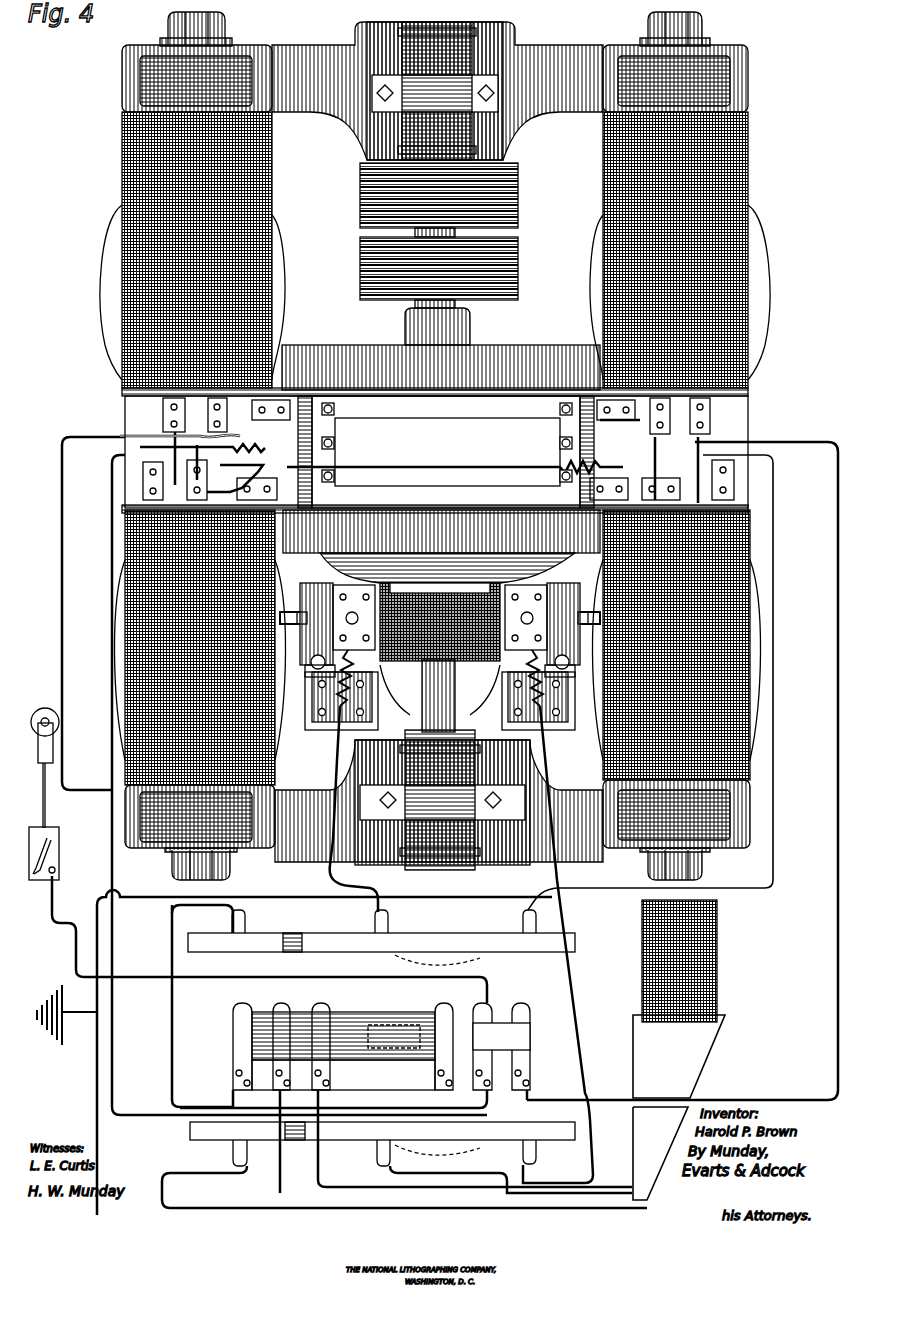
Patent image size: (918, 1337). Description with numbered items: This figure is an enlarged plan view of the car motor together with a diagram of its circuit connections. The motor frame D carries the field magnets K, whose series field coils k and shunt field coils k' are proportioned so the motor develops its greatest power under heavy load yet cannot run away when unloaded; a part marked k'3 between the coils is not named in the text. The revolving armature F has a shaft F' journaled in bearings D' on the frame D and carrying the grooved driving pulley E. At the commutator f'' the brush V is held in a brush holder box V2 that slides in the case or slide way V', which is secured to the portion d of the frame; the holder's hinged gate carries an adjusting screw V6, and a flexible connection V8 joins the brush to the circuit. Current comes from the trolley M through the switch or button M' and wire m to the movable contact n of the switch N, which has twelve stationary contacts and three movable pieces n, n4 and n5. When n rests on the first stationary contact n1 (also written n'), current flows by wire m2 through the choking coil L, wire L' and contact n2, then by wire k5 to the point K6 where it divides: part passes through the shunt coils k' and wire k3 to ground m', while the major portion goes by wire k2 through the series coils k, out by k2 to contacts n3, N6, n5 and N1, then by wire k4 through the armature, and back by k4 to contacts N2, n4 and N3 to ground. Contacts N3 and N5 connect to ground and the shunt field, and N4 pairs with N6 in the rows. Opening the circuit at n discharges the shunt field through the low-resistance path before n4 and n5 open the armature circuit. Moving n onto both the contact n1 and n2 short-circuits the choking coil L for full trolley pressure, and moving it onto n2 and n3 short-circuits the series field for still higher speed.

The motor frame D is at (437, 442).
The bearings D' is at (442, 435).
The field magnets K is at (272, 270).
The shunt field coils k' is at (433, 446).
The series field coils k is at (421, 482).
The circuit wire to shunt coils k3 is at (105, 335).
The circuit wire connections to series coils k2 is at (228, 428).
The terminal board k'3 is at (435, 450).
The grooved driving pulley E is at (518, 186).
The armature shaft F' is at (458, 520).
The revolving armature F is at (441, 367).
The commutator f'' is at (441, 547).
The brush holder box V2 is at (383, 590).
The flexible connection V8 is at (352, 630).
The case or slide way V' is at (460, 603).
The adjusting screw V6 is at (300, 610).
The brush V is at (440, 690).
The portion of the motor frame d is at (312, 690).
The armature circuit wire k4 is at (330, 862).
The trolley M is at (54, 760).
The switch or button M' is at (65, 853).
The trolley circuit wire m is at (260, 939).
The ground m' is at (61, 1012).
The circuit dividing point K6 is at (105, 787).
The wire from contact n2 k5 is at (112, 1025).
The stationary contact piece N4 is at (381, 931).
The stationary contact piece N2 is at (375, 931).
The stationary contact piece N3 is at (520, 931).
The movable contact piece n4 is at (457, 966).
The stationary contact piece N5 is at (382, 1144).
The stationary contact piece N1 is at (377, 1144).
The stationary contact piece N6 is at (524, 1143).
The movable contact piece n5 is at (446, 1158).
The wire to choking coil m2 is at (404, 1175).
The switch N is at (343, 1036).
The stationary contact pieces n3 is at (386, 1041).
The stationary contact pieces n2 is at (336, 1087).
The stationary contact pieces n1 is at (472, 1087).
The contact n' is at (442, 1038).
The movable contact piece n is at (444, 1053).
The choking magnet L is at (691, 961).
The choking coil circuit wire L' is at (496, 1120).